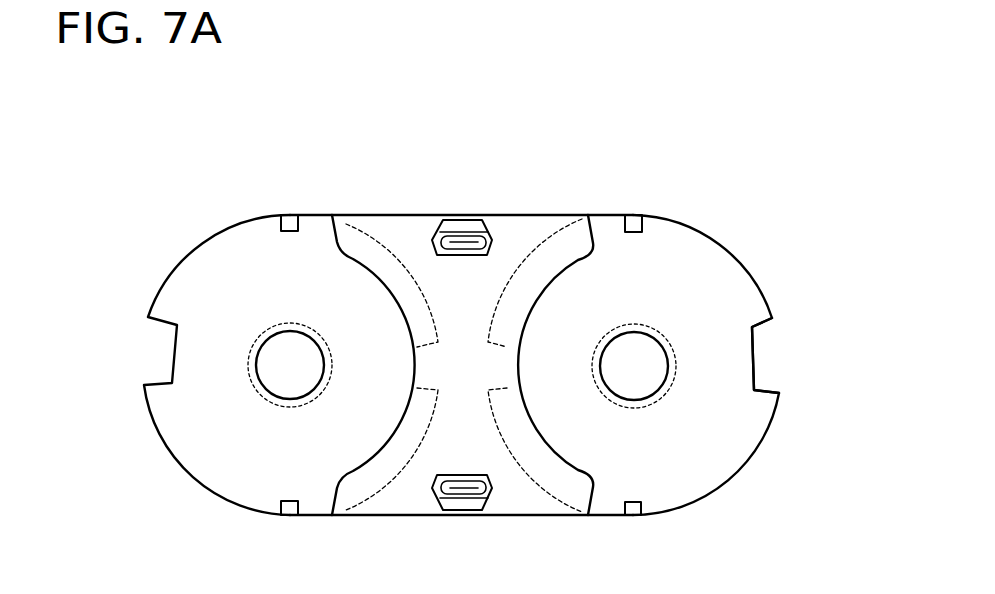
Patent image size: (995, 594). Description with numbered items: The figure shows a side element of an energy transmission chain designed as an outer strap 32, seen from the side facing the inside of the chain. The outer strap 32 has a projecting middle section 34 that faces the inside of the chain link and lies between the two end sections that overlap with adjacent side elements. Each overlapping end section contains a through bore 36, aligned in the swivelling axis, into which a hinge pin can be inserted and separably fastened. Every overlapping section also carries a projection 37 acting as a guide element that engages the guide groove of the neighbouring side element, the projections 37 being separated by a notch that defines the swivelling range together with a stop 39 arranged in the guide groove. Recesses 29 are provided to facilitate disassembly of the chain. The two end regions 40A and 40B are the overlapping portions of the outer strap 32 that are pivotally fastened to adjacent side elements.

The recess 29 is at (635, 512).
The outer strap 32 is at (152, 482).
The middle section 34 is at (383, 498).
The through bore 36 is at (648, 377).
The projection 37 is at (758, 305).
The stop 39 is at (493, 373).
The first disc 40A is at (263, 258).
The second disc 40B is at (658, 282).